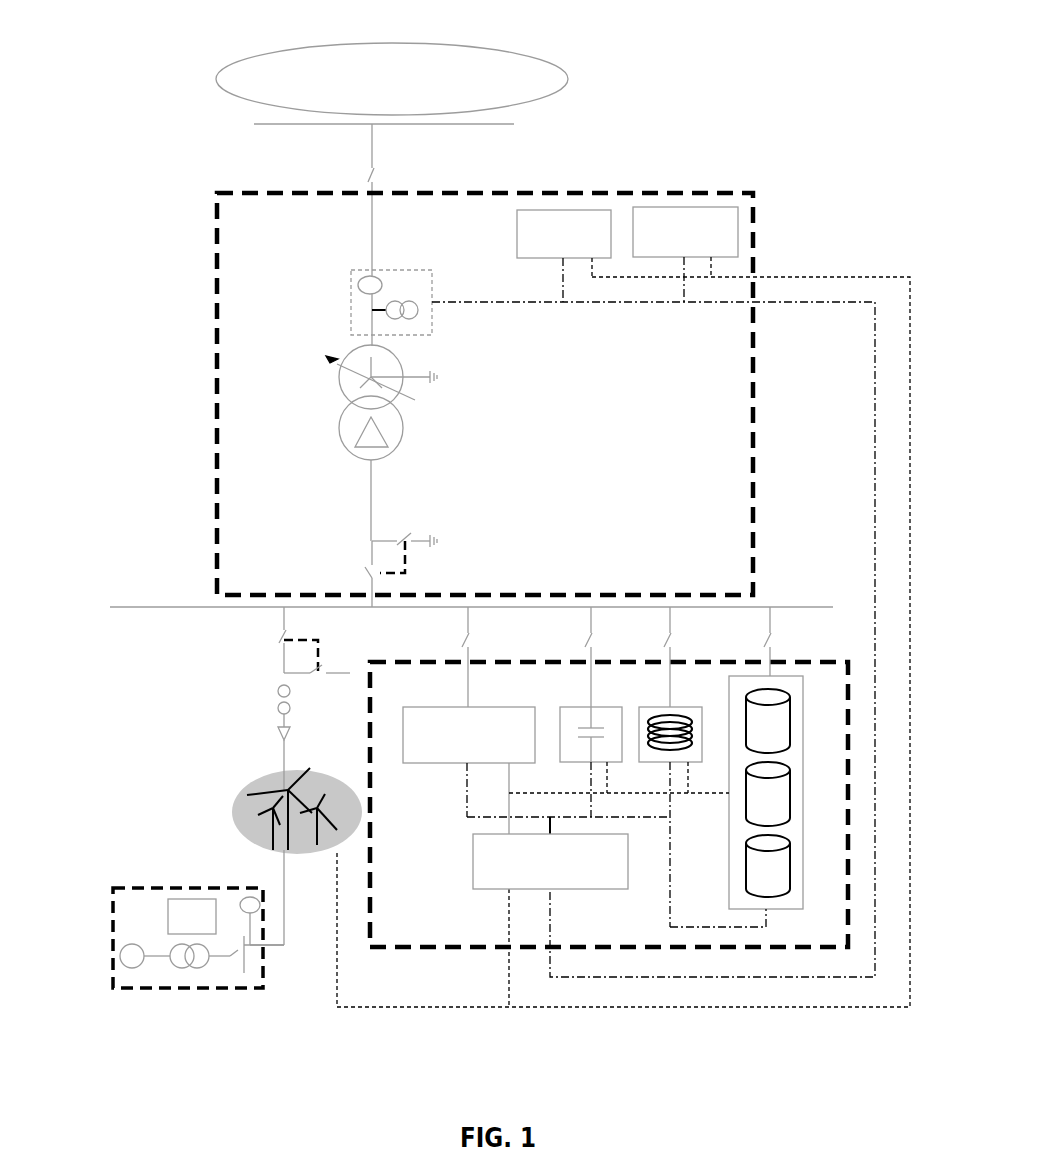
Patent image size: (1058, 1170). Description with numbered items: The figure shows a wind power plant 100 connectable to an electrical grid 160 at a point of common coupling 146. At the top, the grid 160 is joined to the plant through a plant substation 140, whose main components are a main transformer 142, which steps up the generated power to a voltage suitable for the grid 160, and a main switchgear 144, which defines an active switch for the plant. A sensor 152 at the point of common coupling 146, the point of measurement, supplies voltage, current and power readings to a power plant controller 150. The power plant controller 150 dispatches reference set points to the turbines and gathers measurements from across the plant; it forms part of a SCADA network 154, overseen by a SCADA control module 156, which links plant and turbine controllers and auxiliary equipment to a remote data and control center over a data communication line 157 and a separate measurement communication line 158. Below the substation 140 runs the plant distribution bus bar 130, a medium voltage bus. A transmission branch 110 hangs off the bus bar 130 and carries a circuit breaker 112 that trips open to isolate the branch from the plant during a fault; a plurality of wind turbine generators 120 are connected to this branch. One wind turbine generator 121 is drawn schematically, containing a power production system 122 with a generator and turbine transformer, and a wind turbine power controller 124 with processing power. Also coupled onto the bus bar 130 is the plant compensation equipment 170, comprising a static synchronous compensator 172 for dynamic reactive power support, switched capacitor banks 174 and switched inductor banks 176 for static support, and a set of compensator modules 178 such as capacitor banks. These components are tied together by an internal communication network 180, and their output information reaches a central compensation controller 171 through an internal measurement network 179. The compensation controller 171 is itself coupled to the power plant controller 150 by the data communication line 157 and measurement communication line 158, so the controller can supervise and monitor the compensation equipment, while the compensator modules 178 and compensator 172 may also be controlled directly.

The wind power plant 100 is at (133, 100).
The electrical grid 160 is at (550, 78).
The point of common coupling 146 is at (487, 124).
The plant substation 140 is at (226, 217).
The sensor 152 is at (365, 277).
The main transformer 142 is at (338, 391).
The main switchgear 144 is at (372, 562).
The power plant controller 150 is at (562, 212).
The SCADA control module 156 is at (682, 211).
The SCADA network 154 is at (817, 240).
The measurement communication line 158 is at (856, 301).
The data communication line 157 is at (912, 345).
The plant distribution bus bar 130 is at (120, 608).
The transmission branch 110 is at (266, 623).
The circuit breaker 112 is at (288, 652).
The wind turbine generators 120 is at (238, 763).
The power production system 122 is at (125, 926).
The wind turbine power controller 124 is at (168, 914).
The wind turbine generator 121 is at (123, 973).
The plant compensation equipment 170 is at (812, 665).
The static synchronous compensator 172 is at (440, 707).
The switched capacitor banks 174 is at (577, 707).
The switched inductor banks 176 is at (670, 707).
The compensator modules 178 is at (766, 700).
The internal measurement network 179 is at (467, 797).
The internal communication network 180 is at (705, 800).
The compensation controller 171 is at (480, 875).